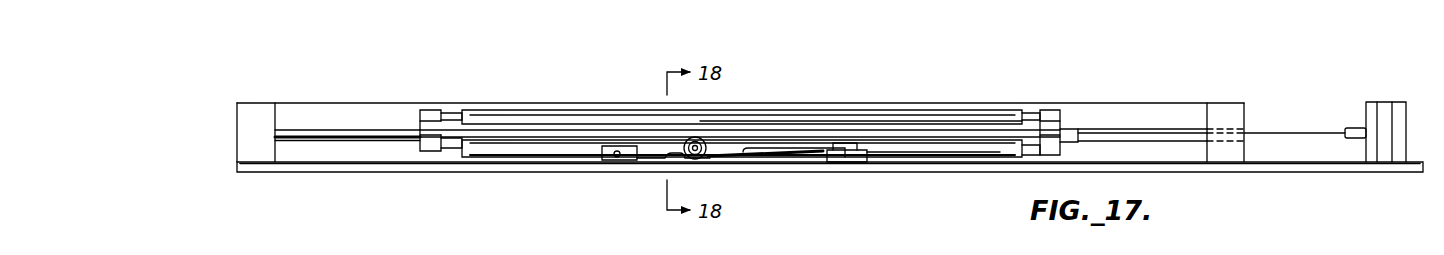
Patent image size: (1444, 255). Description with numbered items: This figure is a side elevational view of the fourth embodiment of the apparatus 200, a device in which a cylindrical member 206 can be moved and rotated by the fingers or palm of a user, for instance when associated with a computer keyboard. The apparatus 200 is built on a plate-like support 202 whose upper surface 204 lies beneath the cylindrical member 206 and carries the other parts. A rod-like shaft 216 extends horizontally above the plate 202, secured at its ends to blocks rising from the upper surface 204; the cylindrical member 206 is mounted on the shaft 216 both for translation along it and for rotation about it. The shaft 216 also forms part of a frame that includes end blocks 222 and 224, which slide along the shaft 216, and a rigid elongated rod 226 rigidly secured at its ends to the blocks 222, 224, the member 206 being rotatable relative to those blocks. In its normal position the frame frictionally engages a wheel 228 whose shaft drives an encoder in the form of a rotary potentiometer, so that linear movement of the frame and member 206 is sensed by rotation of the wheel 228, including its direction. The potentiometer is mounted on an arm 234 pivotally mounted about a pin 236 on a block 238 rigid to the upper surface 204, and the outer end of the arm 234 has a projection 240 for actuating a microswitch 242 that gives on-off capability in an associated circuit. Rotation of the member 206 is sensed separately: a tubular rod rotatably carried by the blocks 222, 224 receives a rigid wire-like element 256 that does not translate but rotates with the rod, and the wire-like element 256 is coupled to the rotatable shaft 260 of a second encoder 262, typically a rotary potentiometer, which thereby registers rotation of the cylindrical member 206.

The apparatus 200 is at (277, 80).
The plate-like support 202 is at (481, 173).
The upper surface 204 is at (315, 160).
The cylindrical member 206 is at (548, 115).
The rod-like shaft 216 is at (348, 130).
The end block 222 is at (1050, 112).
The end block 224 is at (432, 117).
The rigid elongated rod 226 is at (907, 125).
The wheel 228 is at (700, 137).
The arm 234 is at (732, 150).
The pin 236 is at (618, 163).
The block 238 is at (618, 145).
The projection 240 is at (855, 145).
The microswitch 242 is at (847, 158).
The wire-like element 256 is at (1257, 133).
The rotatable shaft 260 is at (1352, 128).
The second encoder 262 is at (1372, 120).